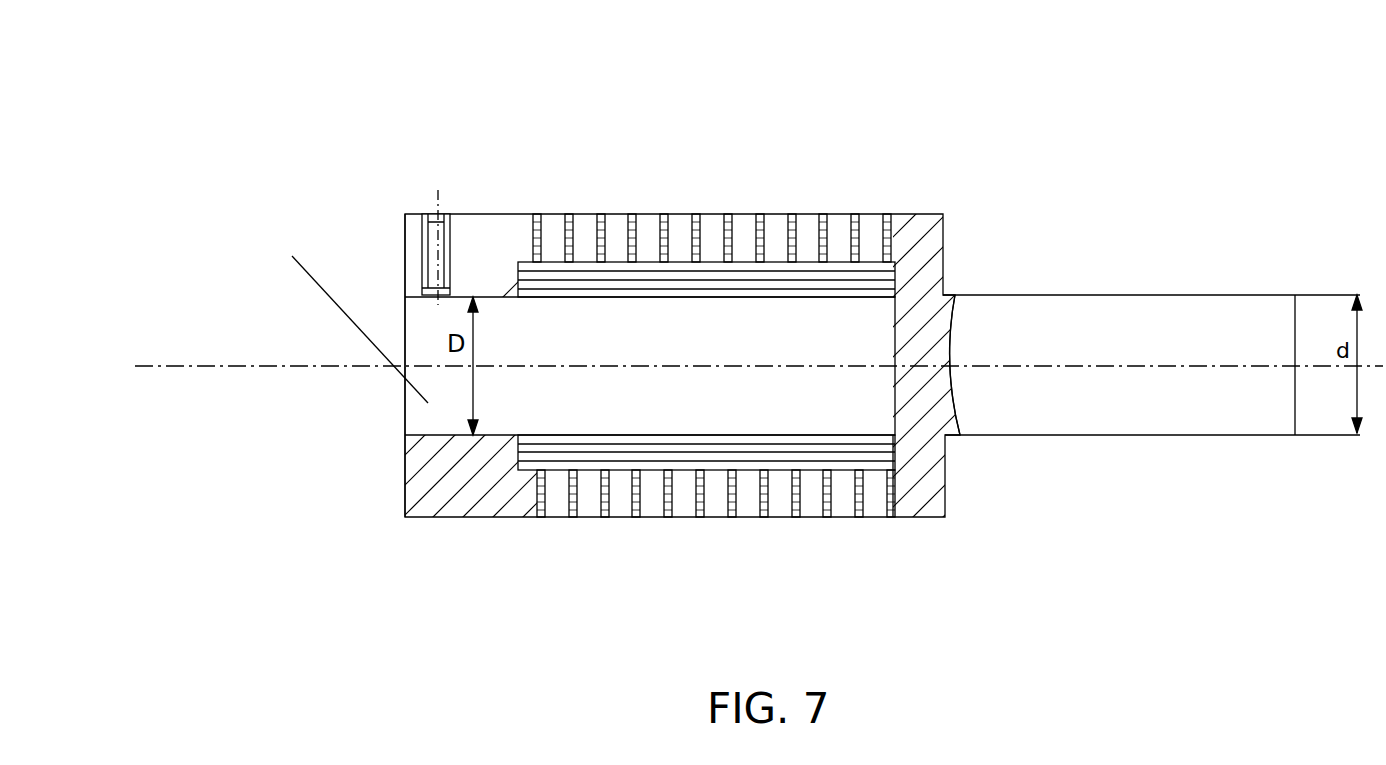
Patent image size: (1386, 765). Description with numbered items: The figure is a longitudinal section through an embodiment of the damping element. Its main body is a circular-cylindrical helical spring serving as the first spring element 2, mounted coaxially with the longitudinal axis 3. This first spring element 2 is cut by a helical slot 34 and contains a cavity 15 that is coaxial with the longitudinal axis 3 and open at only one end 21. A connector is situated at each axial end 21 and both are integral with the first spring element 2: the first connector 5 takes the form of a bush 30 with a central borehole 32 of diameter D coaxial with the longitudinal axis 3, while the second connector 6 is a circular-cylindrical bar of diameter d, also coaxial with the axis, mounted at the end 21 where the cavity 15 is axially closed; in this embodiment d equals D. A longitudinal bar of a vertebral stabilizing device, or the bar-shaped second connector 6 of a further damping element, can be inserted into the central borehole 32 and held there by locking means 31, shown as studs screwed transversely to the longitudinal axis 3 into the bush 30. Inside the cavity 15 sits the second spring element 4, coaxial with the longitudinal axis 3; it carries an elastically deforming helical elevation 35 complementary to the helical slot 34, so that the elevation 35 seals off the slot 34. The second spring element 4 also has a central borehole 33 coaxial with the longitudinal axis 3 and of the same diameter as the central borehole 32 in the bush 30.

The first spring element 2 is at (676, 220).
The longitudinal axis 3 is at (985, 360).
The second spring element 4 is at (768, 448).
The first connector 5 is at (440, 186).
The second connector 6 is at (1170, 320).
The cavity 15 is at (647, 252).
The end of the first spring element 21 is at (507, 230).
The bush 30 is at (407, 268).
The locking means 31 is at (431, 213).
The central borehole 32 is at (422, 408).
The central borehole 33 is at (613, 405).
The helical slot 34 is at (686, 498).
The helical elevation 35 is at (897, 517).